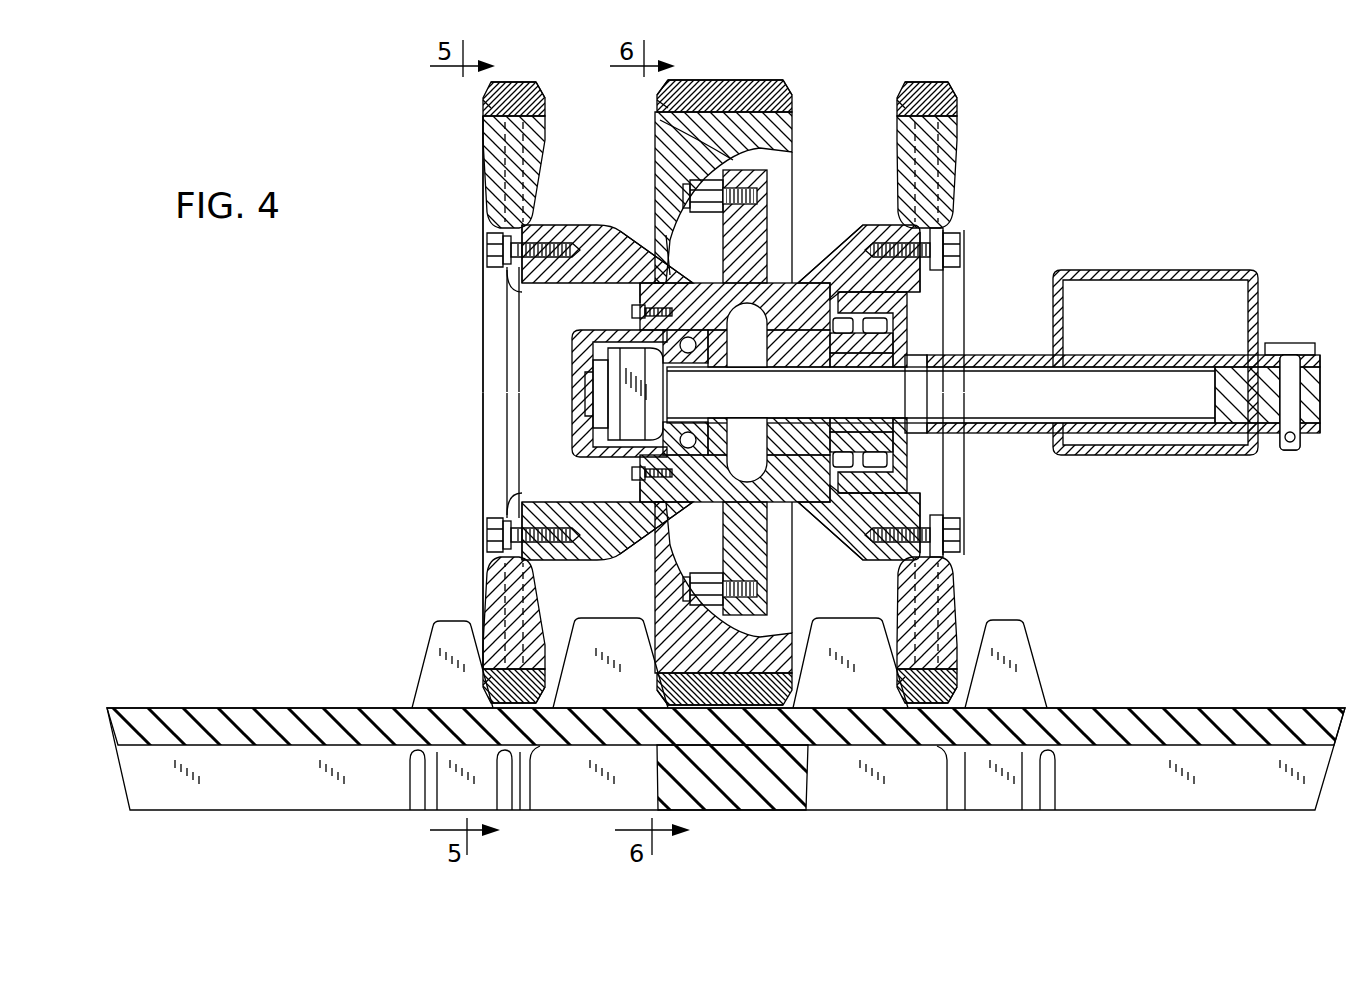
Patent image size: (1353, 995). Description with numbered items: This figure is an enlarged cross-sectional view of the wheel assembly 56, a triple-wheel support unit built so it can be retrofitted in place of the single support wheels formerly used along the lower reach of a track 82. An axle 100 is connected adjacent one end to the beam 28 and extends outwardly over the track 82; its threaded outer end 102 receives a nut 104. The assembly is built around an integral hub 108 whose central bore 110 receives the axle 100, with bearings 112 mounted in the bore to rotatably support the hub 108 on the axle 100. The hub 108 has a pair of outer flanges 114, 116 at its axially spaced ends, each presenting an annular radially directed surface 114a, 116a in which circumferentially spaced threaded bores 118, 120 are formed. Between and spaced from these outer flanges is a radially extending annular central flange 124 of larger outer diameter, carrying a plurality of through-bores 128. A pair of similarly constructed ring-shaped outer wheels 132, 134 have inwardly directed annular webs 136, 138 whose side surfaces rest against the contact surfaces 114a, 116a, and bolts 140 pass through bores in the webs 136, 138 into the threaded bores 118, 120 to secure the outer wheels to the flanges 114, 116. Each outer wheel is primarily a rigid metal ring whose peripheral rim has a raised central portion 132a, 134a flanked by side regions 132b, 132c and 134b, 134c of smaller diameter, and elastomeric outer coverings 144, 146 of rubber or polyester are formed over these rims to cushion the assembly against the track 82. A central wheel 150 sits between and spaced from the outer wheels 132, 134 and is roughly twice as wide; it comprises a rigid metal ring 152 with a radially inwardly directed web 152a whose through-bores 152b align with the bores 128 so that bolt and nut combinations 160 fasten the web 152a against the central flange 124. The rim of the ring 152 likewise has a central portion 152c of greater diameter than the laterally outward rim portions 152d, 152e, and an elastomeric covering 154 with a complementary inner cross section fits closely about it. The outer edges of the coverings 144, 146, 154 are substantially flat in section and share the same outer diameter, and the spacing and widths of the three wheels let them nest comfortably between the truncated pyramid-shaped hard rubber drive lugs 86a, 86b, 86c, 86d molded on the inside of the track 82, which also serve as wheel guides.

The beam 28 is at (1172, 270).
The wheel assembly 56 is at (388, 133).
The track 82 is at (238, 706).
The drive lug 86a is at (430, 655).
The drive lug 86b is at (603, 680).
The drive lug 86c is at (868, 685).
The drive lug 86d is at (1020, 668).
The axle 100 is at (1005, 436).
The threaded outer end 102 is at (604, 385).
The nut 104 is at (624, 405).
The hub 108 is at (536, 298).
The central bore 110 is at (642, 330).
The bearings 112 is at (690, 480).
The outer flange 114 is at (570, 224).
The annular radially directed surface 114a is at (520, 228).
The outer flange 116 is at (890, 225).
The annular radially directed surface 116a is at (937, 228).
The threaded bore 118 is at (588, 243).
The threaded bore 120 is at (862, 252).
The central flange 124 is at (762, 225).
The through-bore 128 is at (760, 182).
The outer wheel 132 is at (488, 160).
The raised central portion 132a is at (487, 95).
The side rim region 132b is at (483, 113).
The side rim region 132c is at (540, 117).
The outer wheel 134 is at (955, 170).
The raised central portion 134a is at (957, 92).
The side rim region 134b is at (900, 115).
The side rim region 134c is at (957, 120).
The annular web 136 is at (505, 285).
The annular web 138 is at (936, 280).
The bolts 140 is at (487, 250).
The elastomeric outer covering 144 is at (512, 82).
The elastomeric outer covering 146 is at (920, 82).
The central wheel 150 is at (748, 118).
The rigid metal ring 152 is at (780, 150).
The radially inwardly directed web 152a is at (700, 165).
The through-bore 152b is at (713, 220).
The central rim portion 152c is at (731, 80).
The peripheral rim portion 152d is at (660, 113).
The peripheral rim portion 152e is at (783, 118).
The elastomeric covering 154 is at (707, 82).
The bolt and nut combinations 160 is at (682, 194).